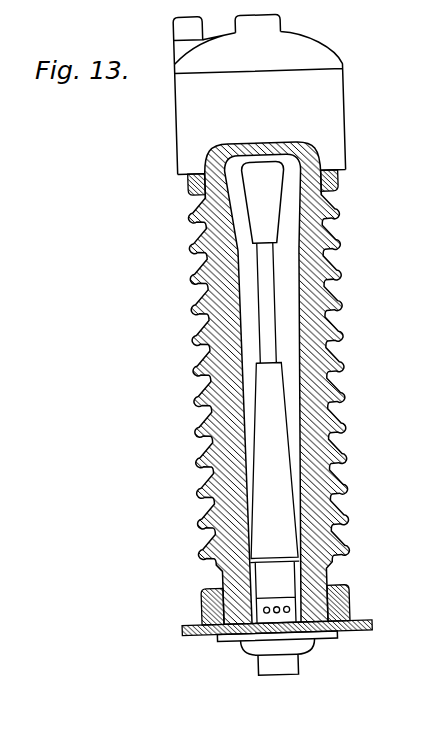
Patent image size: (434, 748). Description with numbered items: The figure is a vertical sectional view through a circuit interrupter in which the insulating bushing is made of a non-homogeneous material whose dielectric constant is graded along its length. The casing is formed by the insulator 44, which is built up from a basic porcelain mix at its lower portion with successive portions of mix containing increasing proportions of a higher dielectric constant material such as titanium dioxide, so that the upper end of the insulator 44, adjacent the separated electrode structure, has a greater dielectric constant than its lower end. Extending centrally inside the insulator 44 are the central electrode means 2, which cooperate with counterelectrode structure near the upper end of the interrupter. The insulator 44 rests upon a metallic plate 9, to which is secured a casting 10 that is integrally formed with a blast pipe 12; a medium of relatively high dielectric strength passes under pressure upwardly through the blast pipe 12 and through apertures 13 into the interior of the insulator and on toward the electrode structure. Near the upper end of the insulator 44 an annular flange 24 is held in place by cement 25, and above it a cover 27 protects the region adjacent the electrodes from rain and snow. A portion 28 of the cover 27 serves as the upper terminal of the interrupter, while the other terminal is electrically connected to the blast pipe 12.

The central electrode means 2 is at (269, 224).
The metallic plate 9 is at (366, 621).
The casting 10 is at (303, 644).
The blast pipe 12 is at (299, 672).
The apertures 13 is at (287, 607).
The annular flange 24 is at (338, 185).
The cement 25 is at (329, 200).
The cover 27 is at (326, 49).
The portion of the cover 28 is at (175, 30).
The insulator 44 is at (341, 337).